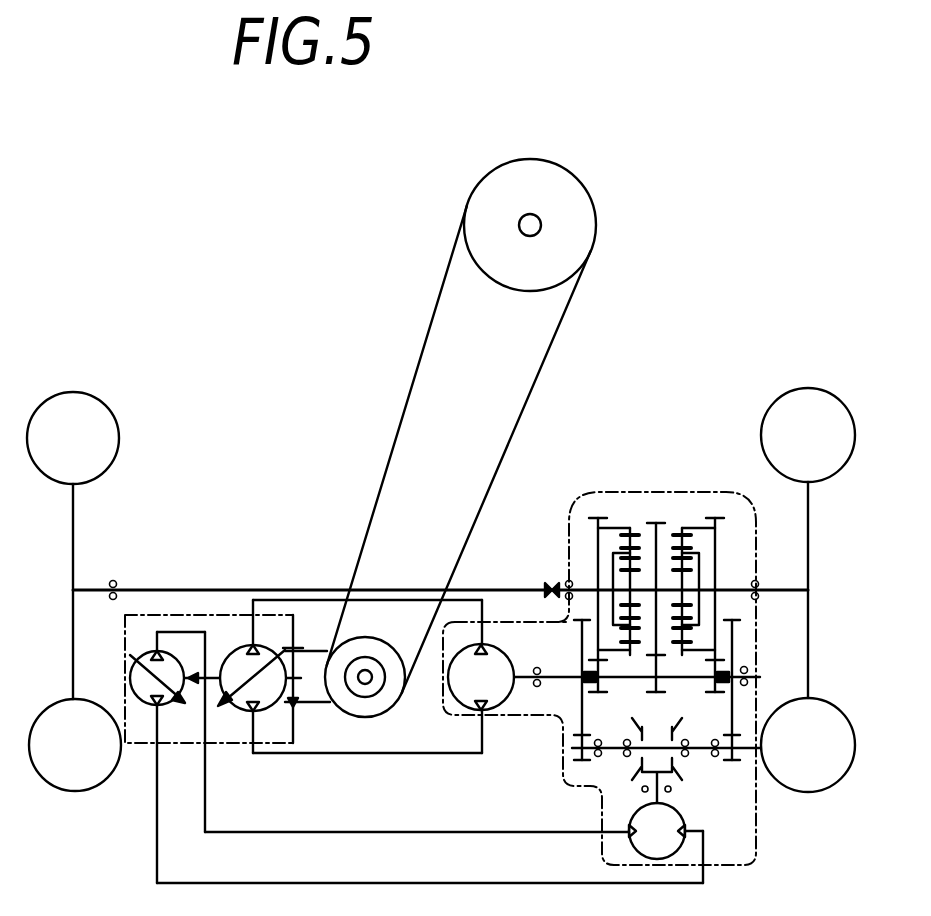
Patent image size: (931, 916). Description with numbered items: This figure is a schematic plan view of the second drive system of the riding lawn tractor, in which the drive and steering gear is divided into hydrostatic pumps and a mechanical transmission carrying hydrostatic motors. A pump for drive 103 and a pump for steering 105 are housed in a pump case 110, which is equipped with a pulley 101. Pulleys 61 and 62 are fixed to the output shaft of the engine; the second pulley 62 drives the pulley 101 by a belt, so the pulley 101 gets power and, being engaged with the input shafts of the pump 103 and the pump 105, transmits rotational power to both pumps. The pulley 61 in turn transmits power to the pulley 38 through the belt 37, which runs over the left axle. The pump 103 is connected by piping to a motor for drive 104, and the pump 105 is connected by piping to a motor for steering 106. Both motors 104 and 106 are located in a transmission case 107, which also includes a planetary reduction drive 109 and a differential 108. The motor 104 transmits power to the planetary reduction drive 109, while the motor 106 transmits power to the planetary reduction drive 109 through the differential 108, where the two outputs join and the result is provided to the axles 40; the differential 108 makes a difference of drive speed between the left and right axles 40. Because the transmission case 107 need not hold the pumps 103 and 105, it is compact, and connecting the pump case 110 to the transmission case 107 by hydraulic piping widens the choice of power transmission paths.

The belt 37 is at (436, 320).
The pulley 38 is at (557, 191).
The axles 40 is at (176, 590).
The pulley 61 is at (392, 696).
The second pulley 62 is at (350, 690).
The pulley 101 is at (300, 652).
The pump for drive 103 is at (240, 642).
The motor for drive 104 is at (496, 712).
The pump for steering 105 is at (140, 703).
The motor for steering 106 is at (660, 848).
The transmission case 107 is at (745, 856).
The differential 108 is at (708, 778).
The planetary reduction drive 109 is at (670, 510).
The pump case 110 is at (224, 742).